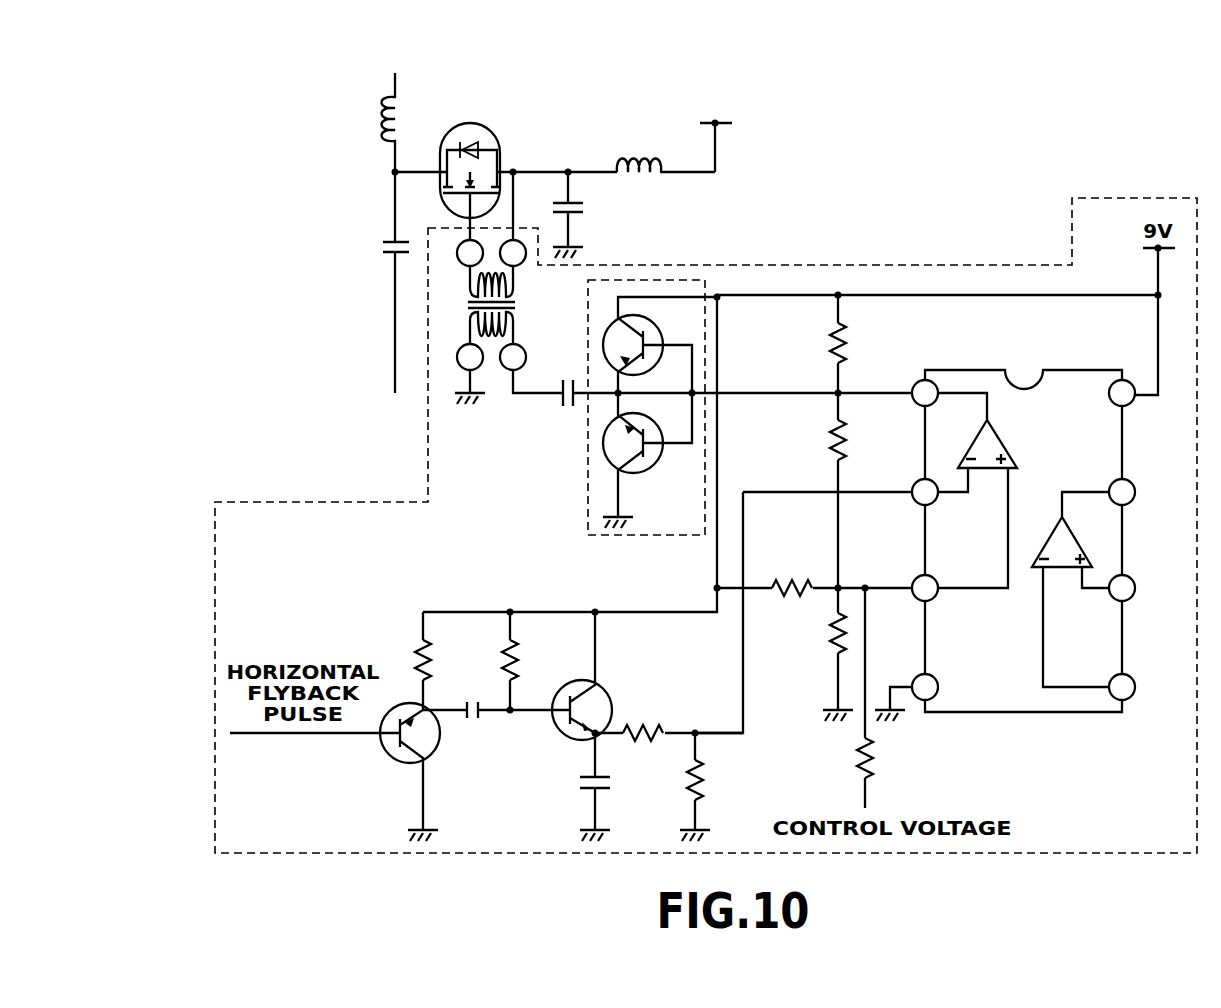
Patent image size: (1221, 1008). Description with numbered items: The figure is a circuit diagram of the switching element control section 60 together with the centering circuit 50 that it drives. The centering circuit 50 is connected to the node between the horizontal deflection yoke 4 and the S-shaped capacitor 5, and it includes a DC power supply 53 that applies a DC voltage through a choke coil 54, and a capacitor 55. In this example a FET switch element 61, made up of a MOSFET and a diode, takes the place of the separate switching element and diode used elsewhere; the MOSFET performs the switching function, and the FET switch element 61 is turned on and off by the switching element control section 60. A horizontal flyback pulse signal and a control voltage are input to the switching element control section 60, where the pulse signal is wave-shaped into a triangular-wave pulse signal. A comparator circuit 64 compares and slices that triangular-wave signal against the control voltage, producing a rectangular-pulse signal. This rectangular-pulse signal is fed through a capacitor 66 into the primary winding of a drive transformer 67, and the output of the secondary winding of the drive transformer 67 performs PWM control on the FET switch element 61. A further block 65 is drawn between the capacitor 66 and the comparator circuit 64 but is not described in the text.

The horizontal deflection yoke 4 is at (413, 114).
The S-shaped capacitor 5 is at (384, 238).
The centering circuit 50 is at (620, 120).
The DC power supply 53 is at (730, 118).
The choke coil 54 is at (652, 182).
The capacitor 55 is at (588, 211).
The switching element control section 60 is at (328, 502).
The FET switch element 61 is at (512, 133).
The comparator circuit 64 is at (1005, 430).
The push-pull buffer transistors 65 is at (588, 514).
The capacitor 66 is at (553, 402).
The drive transformer 67 is at (450, 302).